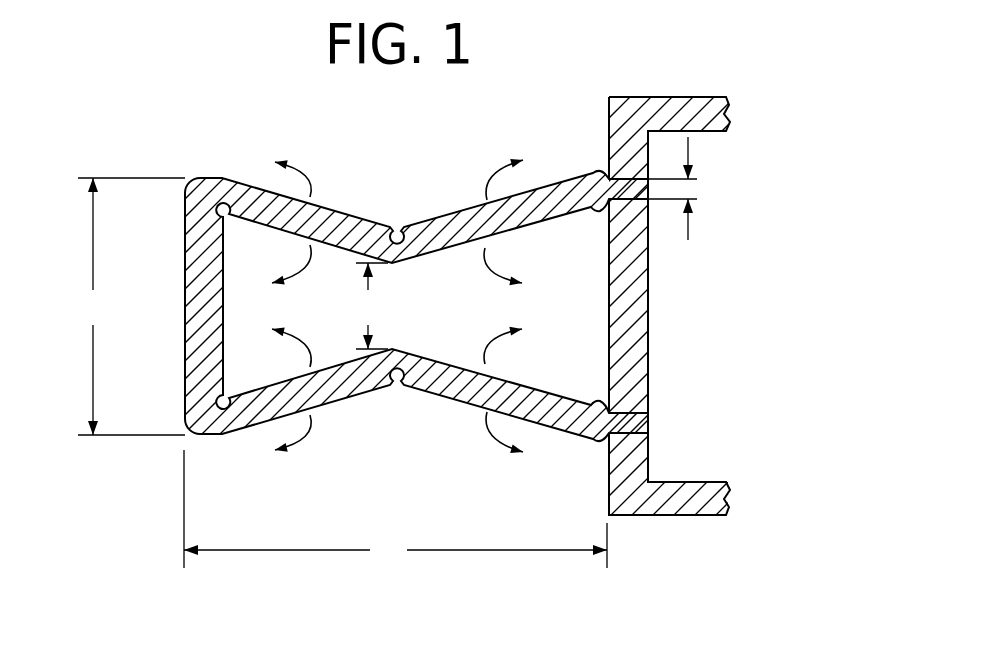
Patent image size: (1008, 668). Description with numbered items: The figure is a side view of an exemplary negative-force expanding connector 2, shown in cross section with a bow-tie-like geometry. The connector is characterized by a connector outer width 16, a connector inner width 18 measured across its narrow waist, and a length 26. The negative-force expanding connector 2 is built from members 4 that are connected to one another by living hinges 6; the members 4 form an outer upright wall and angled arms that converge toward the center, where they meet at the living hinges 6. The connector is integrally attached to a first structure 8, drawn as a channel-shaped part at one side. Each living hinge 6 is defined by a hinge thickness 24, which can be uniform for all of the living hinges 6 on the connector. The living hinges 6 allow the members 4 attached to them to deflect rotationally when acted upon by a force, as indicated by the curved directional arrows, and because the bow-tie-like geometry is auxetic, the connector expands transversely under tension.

The negative-force expanding connector 2 is at (405, 136).
The member 4 is at (167, 300).
The living hinge 6 is at (232, 220).
The first structure 8 is at (688, 105).
The connector outer width 16 is at (130, 306).
The connector inner width 18 is at (369, 306).
The hinge thickness 24 is at (687, 204).
The length 26 is at (395, 509).